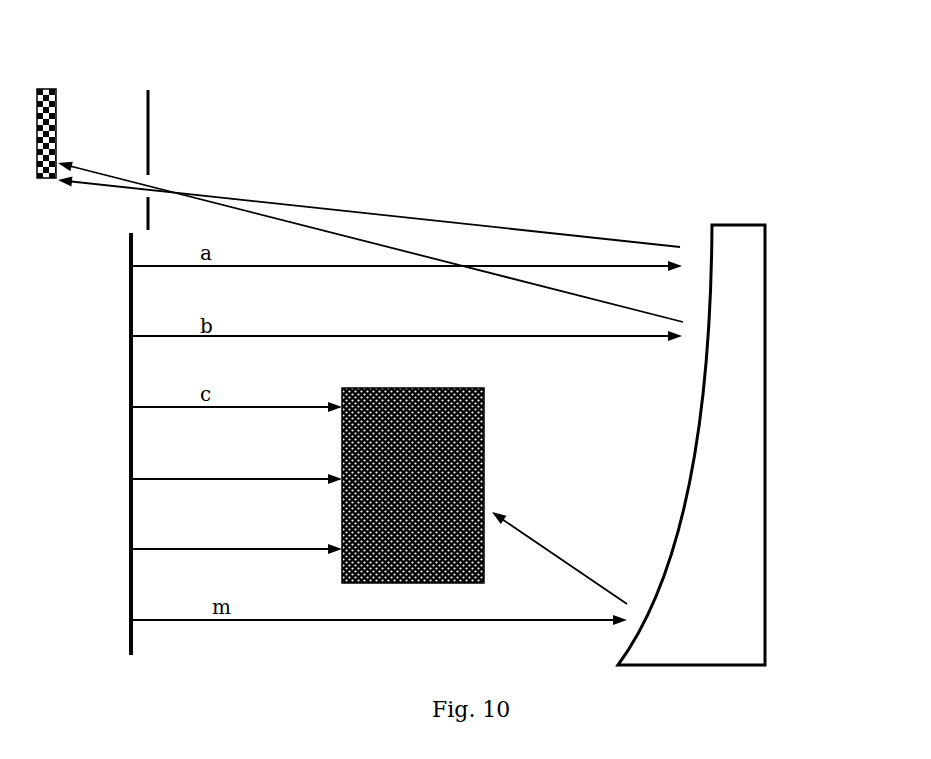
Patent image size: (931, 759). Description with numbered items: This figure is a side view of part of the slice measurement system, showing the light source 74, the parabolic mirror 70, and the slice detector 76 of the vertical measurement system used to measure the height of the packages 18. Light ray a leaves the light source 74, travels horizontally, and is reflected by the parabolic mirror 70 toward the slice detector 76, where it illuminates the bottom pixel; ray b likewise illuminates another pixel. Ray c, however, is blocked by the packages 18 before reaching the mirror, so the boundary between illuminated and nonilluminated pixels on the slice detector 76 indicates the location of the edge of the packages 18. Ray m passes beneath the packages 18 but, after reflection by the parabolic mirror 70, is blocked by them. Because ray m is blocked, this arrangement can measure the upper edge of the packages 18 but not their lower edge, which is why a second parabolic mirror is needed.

The slice detector 76 is at (57, 100).
The light source 74 is at (127, 375).
The packages 18 is at (484, 462).
The parabolic mirror 70 is at (766, 423).